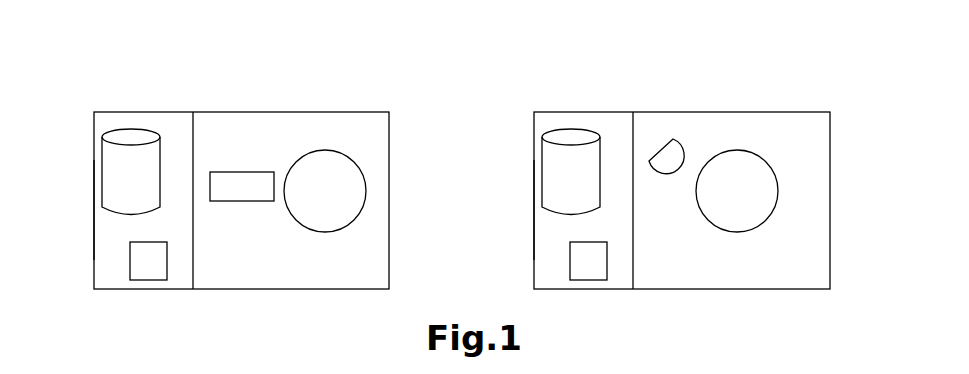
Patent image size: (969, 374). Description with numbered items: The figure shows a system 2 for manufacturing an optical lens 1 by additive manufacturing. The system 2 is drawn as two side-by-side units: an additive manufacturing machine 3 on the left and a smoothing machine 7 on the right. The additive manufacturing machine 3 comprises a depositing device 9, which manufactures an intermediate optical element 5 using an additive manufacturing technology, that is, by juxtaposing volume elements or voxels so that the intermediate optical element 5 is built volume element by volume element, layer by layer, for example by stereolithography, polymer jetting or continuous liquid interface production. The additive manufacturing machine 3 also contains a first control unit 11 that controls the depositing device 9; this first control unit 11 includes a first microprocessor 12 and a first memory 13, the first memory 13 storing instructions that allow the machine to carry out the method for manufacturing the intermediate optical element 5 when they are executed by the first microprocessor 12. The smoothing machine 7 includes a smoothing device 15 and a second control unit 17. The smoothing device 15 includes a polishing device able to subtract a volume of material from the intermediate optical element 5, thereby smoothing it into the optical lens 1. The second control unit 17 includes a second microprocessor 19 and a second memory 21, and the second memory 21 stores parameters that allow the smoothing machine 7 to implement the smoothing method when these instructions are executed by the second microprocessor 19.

The optical lens 1 is at (760, 189).
The system 2 is at (136, 73).
The additive manufacturing machine 3 is at (302, 108).
The intermediate optical element 5 is at (340, 191).
The smoothing machine 7 is at (779, 108).
The depositing device 9 is at (242, 186).
The first control unit 11 is at (94, 242).
The first microprocessor 12 is at (149, 270).
The first memory 13 is at (112, 176).
The smoothing device 15 is at (665, 156).
The second control unit 17 is at (534, 222).
The second microprocessor 19 is at (589, 268).
The second memory 21 is at (552, 176).